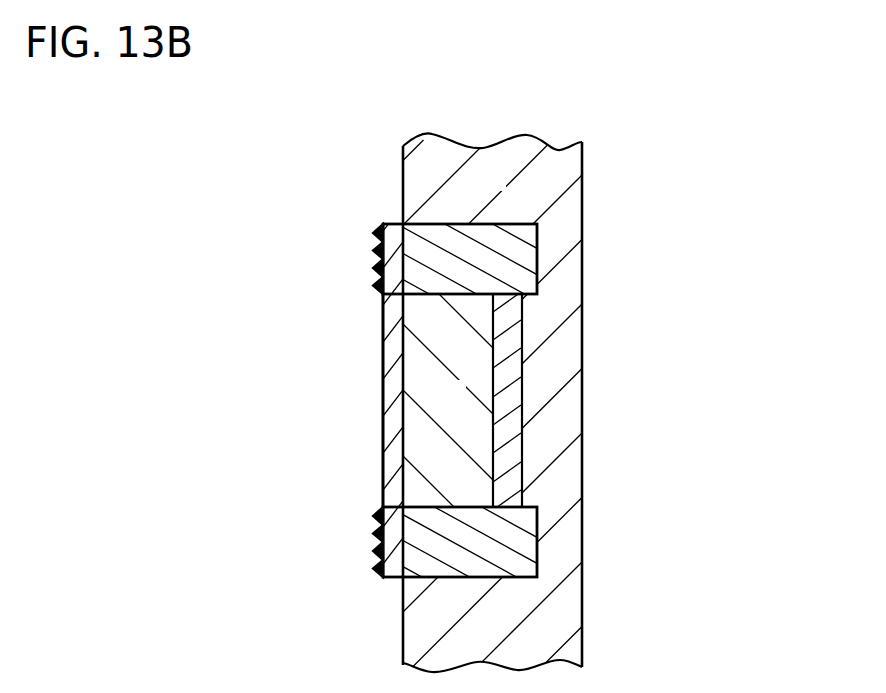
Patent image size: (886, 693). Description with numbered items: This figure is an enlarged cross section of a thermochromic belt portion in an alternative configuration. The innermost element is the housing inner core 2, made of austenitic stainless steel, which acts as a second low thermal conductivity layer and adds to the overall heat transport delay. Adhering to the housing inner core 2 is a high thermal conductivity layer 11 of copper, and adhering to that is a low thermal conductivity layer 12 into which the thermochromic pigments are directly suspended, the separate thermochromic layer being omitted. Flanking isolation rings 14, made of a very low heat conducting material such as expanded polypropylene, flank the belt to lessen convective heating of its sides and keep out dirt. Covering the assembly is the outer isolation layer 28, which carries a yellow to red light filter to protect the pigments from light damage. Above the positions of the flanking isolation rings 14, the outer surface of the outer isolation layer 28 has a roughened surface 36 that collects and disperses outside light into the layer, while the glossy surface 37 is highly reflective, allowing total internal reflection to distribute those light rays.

The housing inner core 2 is at (502, 189).
The high thermal conductivity layer 11 is at (507, 373).
The low thermal conductivity layer 12 is at (462, 404).
The flanking isolation rings 14 is at (520, 256).
The outer isolation layer 28 is at (392, 435).
The roughened surface 36 is at (350, 260).
The glossy surface 37 is at (350, 382).